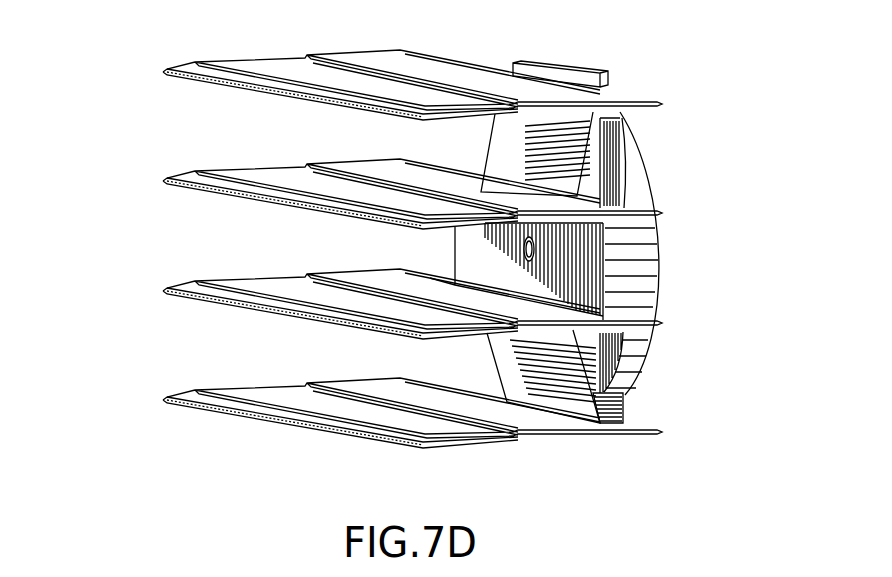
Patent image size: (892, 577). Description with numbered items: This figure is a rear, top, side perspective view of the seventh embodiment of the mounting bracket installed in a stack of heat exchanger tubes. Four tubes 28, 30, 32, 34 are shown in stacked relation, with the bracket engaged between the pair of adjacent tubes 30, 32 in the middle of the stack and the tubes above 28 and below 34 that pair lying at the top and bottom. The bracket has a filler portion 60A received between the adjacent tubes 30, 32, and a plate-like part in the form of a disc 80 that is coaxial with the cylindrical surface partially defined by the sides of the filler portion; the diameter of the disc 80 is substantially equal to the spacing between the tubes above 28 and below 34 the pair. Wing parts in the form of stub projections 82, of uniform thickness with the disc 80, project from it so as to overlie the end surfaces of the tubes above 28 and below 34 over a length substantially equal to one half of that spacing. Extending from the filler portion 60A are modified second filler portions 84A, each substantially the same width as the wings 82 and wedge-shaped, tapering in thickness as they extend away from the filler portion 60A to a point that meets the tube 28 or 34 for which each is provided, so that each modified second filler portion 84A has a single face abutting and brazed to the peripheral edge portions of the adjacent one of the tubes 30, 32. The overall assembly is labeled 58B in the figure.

The tube 28 is at (142, 56).
The tube 30 is at (142, 166).
The tube 32 is at (144, 274).
The tube 34 is at (144, 382).
The stub projections 82 is at (614, 83).
The disc 80 is at (640, 263).
The filler portion 60A is at (627, 295).
The modified second filler portion 84A is at (510, 152).
The blade assembly 58B is at (743, 45).